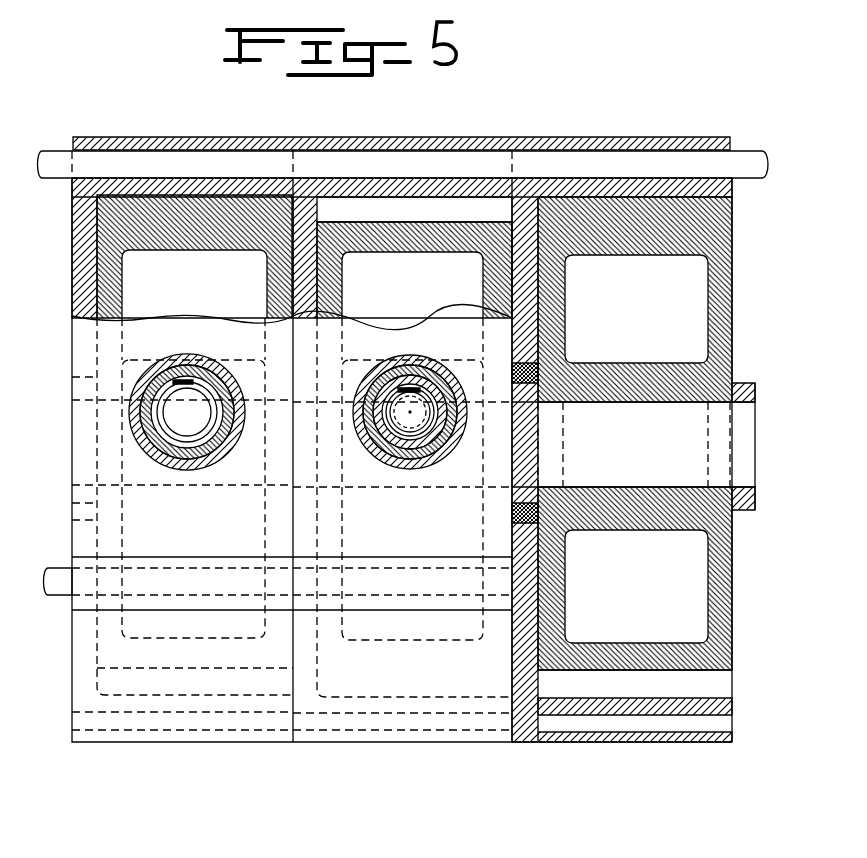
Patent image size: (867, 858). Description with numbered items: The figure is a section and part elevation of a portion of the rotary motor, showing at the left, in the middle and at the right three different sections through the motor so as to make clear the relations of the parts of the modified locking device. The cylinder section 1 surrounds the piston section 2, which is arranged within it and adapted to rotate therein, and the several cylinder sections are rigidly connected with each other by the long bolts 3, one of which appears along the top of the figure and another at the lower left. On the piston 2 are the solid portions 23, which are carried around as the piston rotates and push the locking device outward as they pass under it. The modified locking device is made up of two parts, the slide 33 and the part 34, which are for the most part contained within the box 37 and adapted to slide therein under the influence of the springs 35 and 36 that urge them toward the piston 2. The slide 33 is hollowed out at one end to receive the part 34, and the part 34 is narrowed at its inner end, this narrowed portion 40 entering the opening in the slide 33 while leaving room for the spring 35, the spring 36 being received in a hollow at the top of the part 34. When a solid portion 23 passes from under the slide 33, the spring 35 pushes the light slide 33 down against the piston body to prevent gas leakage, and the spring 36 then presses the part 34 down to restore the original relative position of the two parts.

The cylinder section 1 is at (714, 712).
The piston section 2 is at (718, 312).
The long bolt 3 is at (609, 168).
The solid portion 23 is at (97, 208).
The slide 33 is at (421, 368).
The part of locking device 34 is at (238, 401).
The spring 35 is at (410, 436).
The spring 36 is at (164, 420).
The box 37 is at (456, 468).
The narrowed portion 40 is at (384, 449).